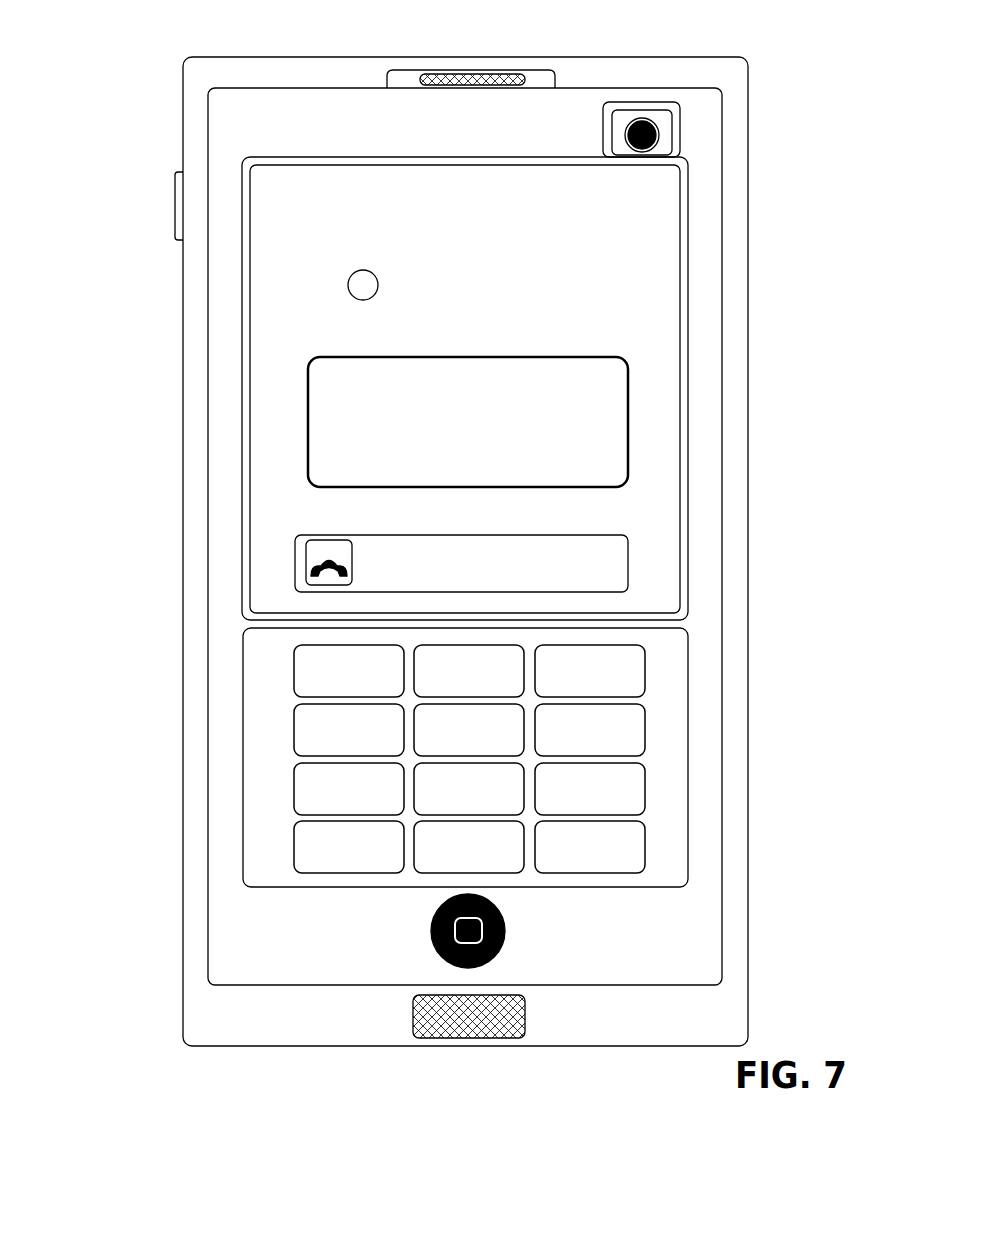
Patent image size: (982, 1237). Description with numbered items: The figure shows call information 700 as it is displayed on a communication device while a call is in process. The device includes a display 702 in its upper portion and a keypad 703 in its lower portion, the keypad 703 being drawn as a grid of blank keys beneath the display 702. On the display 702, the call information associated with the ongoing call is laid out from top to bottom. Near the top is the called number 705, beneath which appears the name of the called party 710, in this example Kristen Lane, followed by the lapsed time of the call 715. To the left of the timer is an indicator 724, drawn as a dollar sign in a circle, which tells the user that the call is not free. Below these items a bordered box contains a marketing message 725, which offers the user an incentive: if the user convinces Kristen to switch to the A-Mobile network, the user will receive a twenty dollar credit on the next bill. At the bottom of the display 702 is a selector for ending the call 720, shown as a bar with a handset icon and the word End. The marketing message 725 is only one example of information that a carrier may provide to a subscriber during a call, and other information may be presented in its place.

The call information 700 is at (805, 63).
The display 702 is at (280, 290).
The keypad 703 is at (267, 667).
The called number 705 is at (530, 204).
The name of the called party 710 is at (522, 250).
The lapsed time of the call 715 is at (487, 288).
The selector for ending the call 720 is at (628, 541).
The indicator that the call is not free 724 is at (349, 290).
The marketing message 725 is at (628, 424).